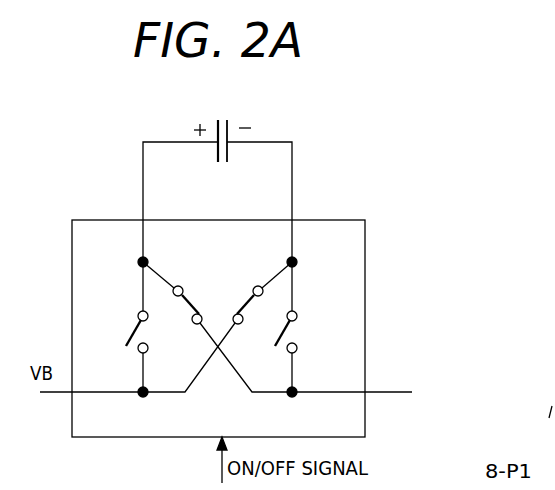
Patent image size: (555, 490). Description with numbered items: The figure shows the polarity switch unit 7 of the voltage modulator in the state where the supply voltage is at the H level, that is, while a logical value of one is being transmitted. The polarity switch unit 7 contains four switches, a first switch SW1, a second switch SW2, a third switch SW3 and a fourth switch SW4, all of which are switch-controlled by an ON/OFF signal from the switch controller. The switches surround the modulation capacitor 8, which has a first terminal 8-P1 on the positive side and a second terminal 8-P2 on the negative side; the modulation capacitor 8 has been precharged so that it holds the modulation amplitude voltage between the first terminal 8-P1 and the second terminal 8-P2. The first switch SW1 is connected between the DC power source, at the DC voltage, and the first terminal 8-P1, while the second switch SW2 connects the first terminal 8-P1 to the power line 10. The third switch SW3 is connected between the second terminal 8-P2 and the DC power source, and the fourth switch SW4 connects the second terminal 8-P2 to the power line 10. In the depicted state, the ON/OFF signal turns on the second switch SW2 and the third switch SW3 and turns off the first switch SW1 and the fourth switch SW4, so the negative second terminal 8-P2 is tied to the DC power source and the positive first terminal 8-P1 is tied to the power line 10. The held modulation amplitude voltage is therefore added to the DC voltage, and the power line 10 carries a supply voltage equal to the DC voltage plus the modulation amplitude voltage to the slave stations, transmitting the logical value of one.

The polarity switch unit 7 is at (368, 237).
The modulation capacitor 8 is at (218, 163).
The first terminal 8-P1 is at (180, 142).
The second terminal 8-P2 is at (267, 142).
The power line 10 is at (405, 395).
The first switch SW1 is at (125, 330).
The second switch SW2 is at (198, 300).
The third switch SW3 is at (238, 300).
The fourth switch SW4 is at (325, 328).